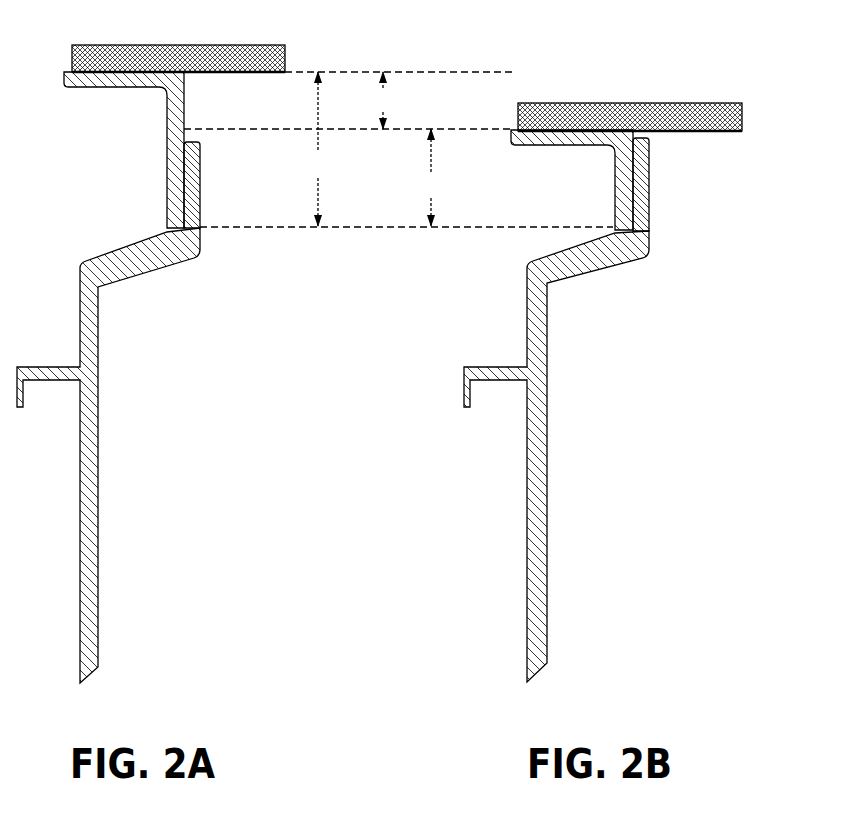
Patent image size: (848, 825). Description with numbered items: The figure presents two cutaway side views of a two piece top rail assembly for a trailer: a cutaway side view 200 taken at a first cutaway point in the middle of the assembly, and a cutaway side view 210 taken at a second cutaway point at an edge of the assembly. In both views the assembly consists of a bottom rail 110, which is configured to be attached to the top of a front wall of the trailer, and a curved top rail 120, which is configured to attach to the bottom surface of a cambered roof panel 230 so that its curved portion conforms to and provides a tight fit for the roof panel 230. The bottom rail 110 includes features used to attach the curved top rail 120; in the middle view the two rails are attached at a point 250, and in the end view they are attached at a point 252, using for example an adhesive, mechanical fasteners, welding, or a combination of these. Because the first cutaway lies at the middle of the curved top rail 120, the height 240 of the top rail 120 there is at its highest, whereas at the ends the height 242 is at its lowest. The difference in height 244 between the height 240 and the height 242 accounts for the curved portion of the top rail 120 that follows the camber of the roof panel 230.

In FIG. 2A, the bottom rail 110 is at (140, 270).
In FIG. 2B, the bottom rail 110 is at (577, 270).
In FIG. 2A, the curved top rail 120 is at (166, 105).
In FIG. 2B, the curved top rail 120 is at (590, 145).
In FIG. 2A, the cambered roof panel 230 is at (160, 45).
In FIG. 2B, the cambered roof panel 230 is at (647, 103).
In FIG. 2A, the attachment point 250 is at (178, 190).
In FIG. 2B, the attachment point 252 is at (634, 186).
In FIG. 2A, the height 240 is at (334, 176).
In FIG. 2A, the height 242 is at (446, 196).
In FIG. 2A, the difference in height 244 is at (398, 110).
In FIG. 2A, the cutaway side view 200 is at (315, 344).
In FIG. 2B, the cutaway side view 210 is at (603, 373).